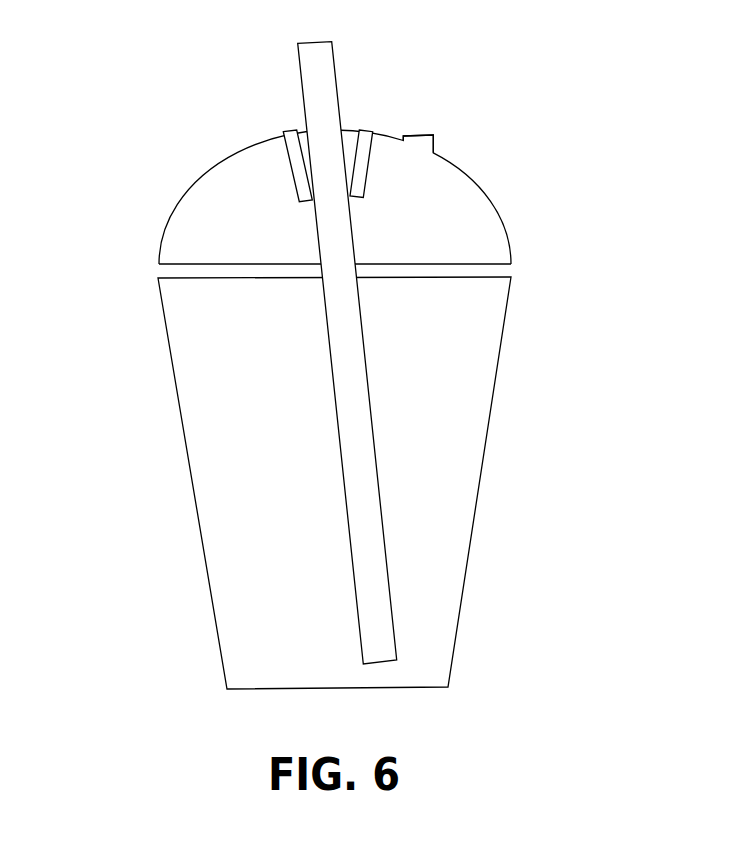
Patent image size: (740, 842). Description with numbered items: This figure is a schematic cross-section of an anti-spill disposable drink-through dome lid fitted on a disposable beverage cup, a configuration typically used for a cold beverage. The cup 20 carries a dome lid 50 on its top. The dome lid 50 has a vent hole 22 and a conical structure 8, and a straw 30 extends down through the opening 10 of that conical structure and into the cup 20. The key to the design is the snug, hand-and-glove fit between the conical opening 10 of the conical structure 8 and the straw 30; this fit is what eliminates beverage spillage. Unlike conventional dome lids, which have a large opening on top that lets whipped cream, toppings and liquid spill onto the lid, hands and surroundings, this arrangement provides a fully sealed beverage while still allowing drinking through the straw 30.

The opening 10 is at (329, 164).
The dome lid 50 is at (495, 208).
The vent hole 22 is at (423, 131).
The conical structure 8 is at (283, 132).
The cup 20 is at (489, 414).
The straw 30 is at (338, 103).